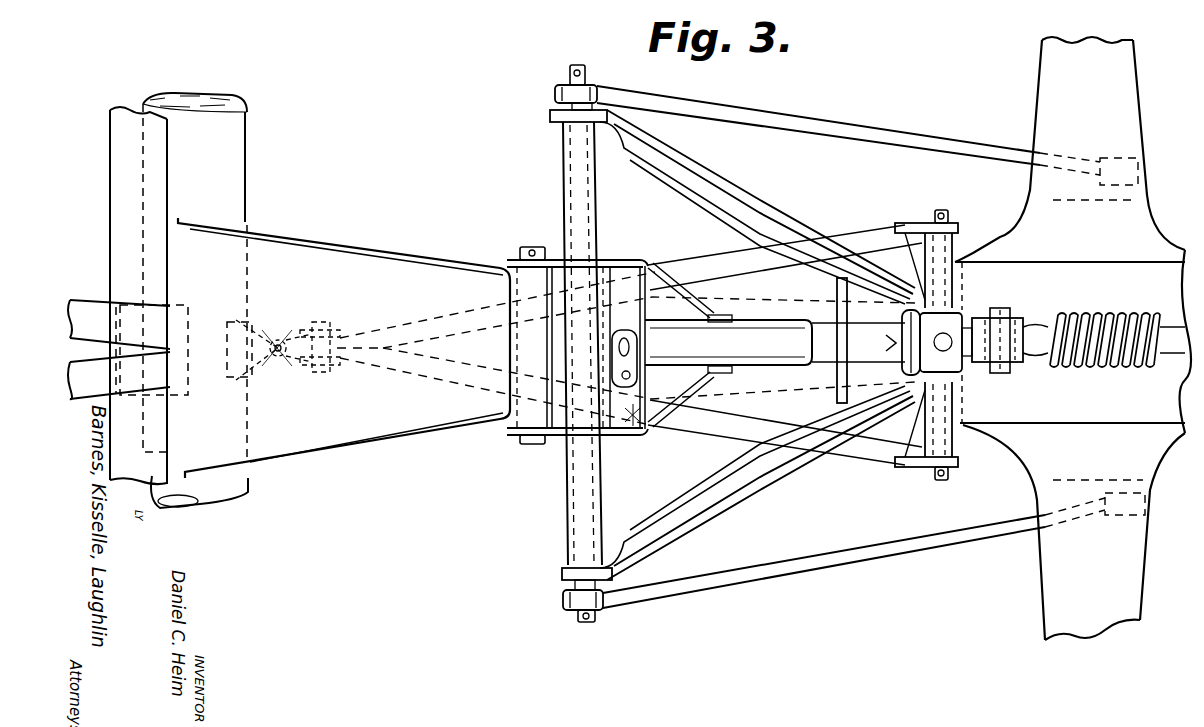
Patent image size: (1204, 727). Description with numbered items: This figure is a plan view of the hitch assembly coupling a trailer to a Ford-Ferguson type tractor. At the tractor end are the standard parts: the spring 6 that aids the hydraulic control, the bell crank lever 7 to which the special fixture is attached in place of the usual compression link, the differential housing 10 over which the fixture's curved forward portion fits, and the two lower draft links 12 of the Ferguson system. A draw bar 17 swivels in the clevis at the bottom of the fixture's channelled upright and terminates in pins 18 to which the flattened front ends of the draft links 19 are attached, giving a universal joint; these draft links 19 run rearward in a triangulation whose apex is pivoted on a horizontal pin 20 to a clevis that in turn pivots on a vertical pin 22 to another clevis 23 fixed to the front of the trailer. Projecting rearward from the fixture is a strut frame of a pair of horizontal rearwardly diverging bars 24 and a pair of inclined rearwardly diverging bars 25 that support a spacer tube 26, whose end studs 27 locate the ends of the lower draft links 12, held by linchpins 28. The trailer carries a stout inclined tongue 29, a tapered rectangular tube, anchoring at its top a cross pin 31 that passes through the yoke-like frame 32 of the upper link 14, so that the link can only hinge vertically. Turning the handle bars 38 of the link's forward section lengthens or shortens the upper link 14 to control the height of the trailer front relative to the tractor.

The spring 6 is at (1088, 318).
The bell crank lever 7 is at (997, 312).
The differential housing 10 is at (1093, 270).
The lower draft links 12 is at (906, 132).
The upper link 14 is at (818, 318).
The draw bar 17 is at (902, 212).
The pins 18 is at (943, 212).
The draft links 19 is at (868, 230).
The horizontal pin 20 is at (330, 322).
The vertical pin 22 is at (288, 366).
The clevis 23 is at (268, 325).
The horizontal rearwardly diverging bars 24 is at (738, 230).
The inclined rearwardly diverging bars 25 is at (789, 212).
The spacer tube 26 is at (600, 468).
The studs 27 is at (600, 616).
The linchpins 28 is at (585, 618).
The tongue 29 is at (409, 268).
The cross pin 31 is at (530, 240).
The yoke-like frame 32 is at (618, 262).
The handle bars 38 is at (835, 372).